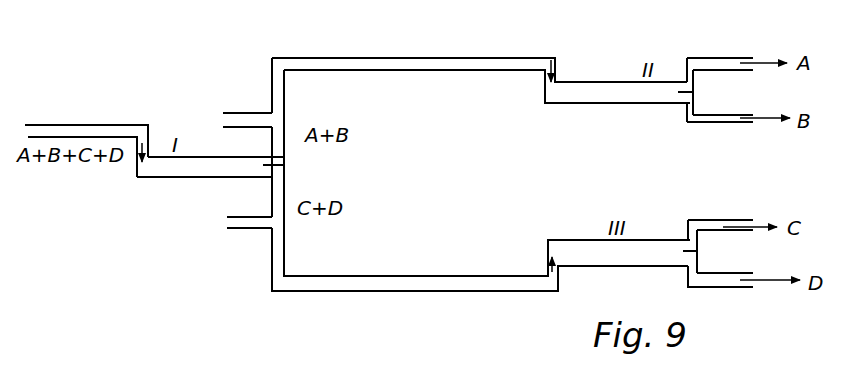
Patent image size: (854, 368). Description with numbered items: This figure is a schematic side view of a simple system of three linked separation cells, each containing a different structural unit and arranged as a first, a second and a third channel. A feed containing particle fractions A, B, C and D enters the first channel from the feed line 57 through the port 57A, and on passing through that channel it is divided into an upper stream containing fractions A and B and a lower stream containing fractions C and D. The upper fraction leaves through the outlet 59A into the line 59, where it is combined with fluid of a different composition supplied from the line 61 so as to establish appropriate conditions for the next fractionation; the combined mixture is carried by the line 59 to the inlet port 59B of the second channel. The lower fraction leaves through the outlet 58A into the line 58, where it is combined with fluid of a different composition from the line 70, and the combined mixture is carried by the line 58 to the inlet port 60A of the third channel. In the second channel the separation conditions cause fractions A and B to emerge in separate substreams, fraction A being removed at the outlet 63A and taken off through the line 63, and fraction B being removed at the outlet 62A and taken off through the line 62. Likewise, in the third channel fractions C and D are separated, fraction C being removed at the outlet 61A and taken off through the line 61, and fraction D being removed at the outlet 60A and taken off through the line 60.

The feed line 57 is at (93, 125).
The port 57A is at (128, 163).
The line 58 is at (272, 200).
The outlet 58A is at (285, 183).
The line 59 is at (286, 105).
The outlet 59A is at (275, 156).
The inlet port 59B is at (556, 82).
The line 60 is at (730, 287).
The inlet port / outlet 60A is at (690, 266).
The line 61 is at (247, 113).
The outlet 61A is at (690, 238).
The line 62 is at (722, 115).
The outlet 62A is at (687, 104).
The line 63 is at (718, 58).
The outlet 63A is at (688, 80).
The line 70 is at (247, 228).